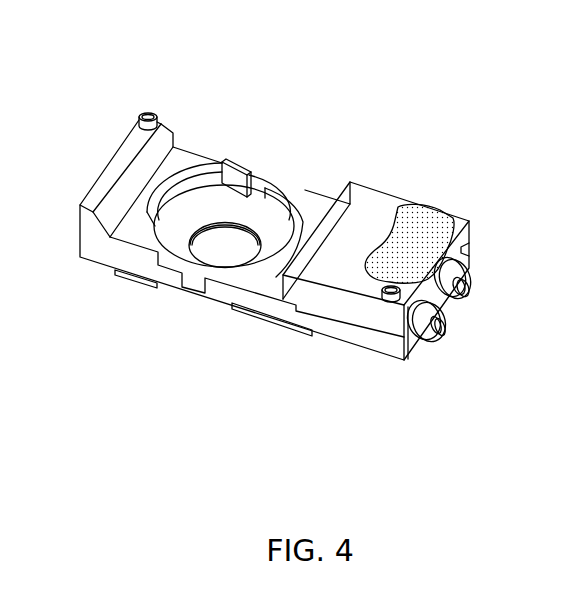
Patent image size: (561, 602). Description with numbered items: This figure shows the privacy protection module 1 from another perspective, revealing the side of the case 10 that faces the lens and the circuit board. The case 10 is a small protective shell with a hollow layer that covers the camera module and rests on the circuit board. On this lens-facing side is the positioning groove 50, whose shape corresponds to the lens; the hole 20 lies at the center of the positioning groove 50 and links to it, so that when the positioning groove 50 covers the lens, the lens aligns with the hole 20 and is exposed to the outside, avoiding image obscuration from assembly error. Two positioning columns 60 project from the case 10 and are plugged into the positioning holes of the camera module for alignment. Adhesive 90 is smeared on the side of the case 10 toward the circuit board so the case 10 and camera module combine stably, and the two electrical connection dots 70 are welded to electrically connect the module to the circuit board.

The privacy protection module 1 is at (78, 100).
The case 10 is at (97, 252).
The hole 20 is at (199, 262).
The positioning groove 50 is at (237, 172).
The positioning columns 60 is at (147, 113).
The electrical connection dots 70 is at (468, 286).
The adhesive 90 is at (411, 214).